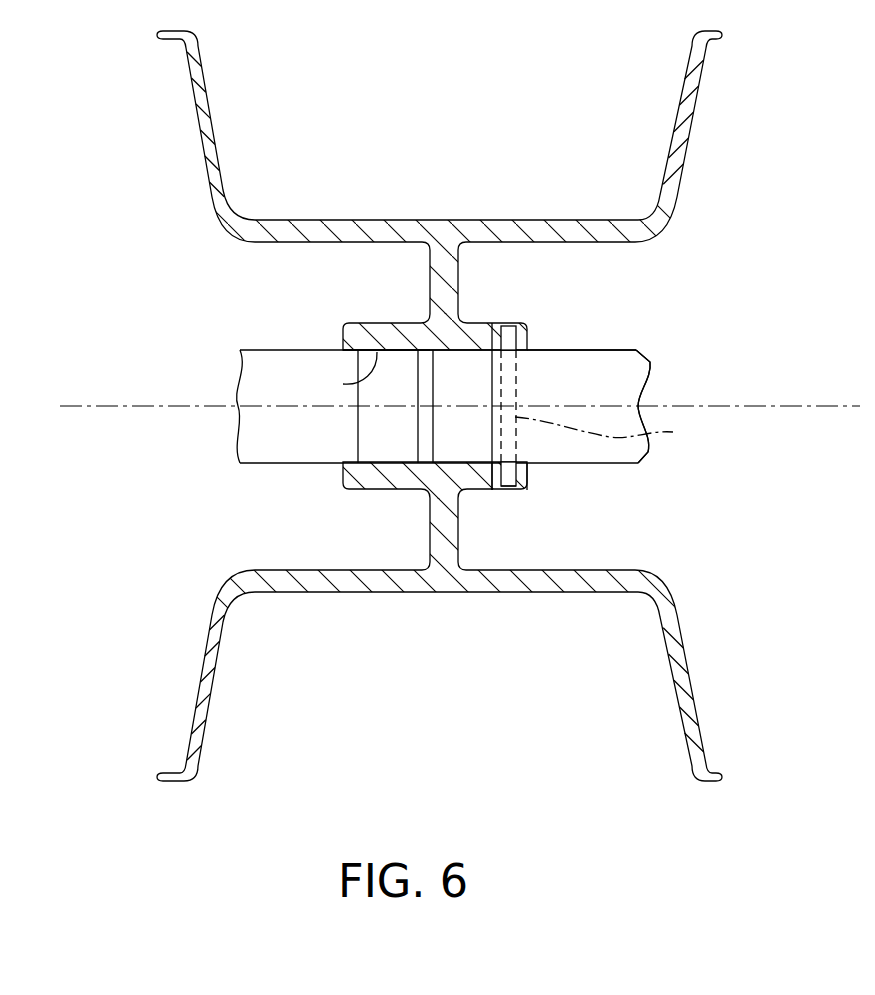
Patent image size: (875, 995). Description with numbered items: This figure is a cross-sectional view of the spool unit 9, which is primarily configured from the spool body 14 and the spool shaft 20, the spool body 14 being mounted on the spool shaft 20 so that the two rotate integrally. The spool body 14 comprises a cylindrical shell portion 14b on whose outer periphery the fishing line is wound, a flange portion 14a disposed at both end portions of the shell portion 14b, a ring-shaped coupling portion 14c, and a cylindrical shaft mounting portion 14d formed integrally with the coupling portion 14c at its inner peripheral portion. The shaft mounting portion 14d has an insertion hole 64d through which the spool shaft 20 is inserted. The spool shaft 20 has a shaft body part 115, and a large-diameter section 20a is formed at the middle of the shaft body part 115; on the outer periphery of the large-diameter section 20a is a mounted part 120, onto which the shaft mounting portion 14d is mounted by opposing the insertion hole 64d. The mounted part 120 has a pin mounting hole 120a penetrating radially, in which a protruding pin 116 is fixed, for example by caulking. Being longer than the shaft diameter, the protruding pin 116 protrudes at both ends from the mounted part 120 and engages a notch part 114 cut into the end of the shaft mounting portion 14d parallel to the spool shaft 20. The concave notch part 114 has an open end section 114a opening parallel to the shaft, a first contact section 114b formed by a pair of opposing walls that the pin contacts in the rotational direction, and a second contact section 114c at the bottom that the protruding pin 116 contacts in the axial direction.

The spool unit 9 is at (522, 135).
The spool body 14 is at (706, 119).
The flange portion 14a is at (210, 118).
The shell portion 14b is at (344, 236).
The coupling portion 14c is at (452, 268).
The shaft mounting portion 14d is at (328, 335).
The spool shaft 20 is at (676, 448).
The large-diameter section 20a is at (602, 347).
The insertion hole 64d is at (343, 383).
The notch part 114 is at (530, 338).
The open end section 114a is at (530, 476).
The first contact section 114b is at (518, 480).
The second contact section 114c is at (510, 476).
The shaft body part 115 is at (658, 382).
The protruding pin 116 is at (512, 326).
The mounted part 120 is at (397, 347).
The pin mounting hole 120a is at (632, 430).